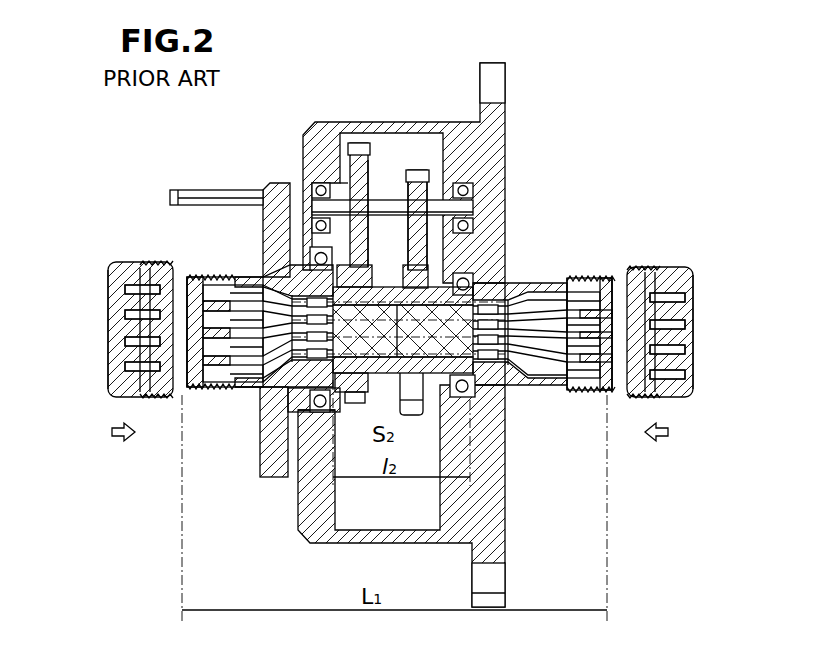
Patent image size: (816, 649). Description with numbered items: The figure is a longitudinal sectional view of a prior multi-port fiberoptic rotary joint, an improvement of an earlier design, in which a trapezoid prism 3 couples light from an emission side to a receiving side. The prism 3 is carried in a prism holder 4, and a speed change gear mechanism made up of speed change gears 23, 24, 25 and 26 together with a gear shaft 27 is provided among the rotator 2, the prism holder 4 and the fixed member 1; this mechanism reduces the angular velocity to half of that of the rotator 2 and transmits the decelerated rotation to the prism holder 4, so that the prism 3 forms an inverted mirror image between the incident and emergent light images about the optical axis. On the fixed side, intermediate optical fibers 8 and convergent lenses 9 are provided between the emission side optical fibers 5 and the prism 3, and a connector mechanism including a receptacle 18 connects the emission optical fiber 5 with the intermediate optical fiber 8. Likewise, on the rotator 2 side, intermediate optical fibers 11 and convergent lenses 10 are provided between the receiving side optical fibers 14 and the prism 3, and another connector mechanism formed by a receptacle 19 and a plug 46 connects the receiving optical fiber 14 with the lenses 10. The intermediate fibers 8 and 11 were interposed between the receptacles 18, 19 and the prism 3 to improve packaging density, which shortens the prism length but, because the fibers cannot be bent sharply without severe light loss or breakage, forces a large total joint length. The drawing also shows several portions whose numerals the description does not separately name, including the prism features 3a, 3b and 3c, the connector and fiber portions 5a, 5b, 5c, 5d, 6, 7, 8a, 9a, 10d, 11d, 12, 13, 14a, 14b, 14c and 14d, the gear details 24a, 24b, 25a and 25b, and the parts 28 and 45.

The fixed member 1 is at (503, 126).
The rotator 2 is at (262, 226).
The trapezoid prism 3 is at (354, 396).
The rotor slots 3a is at (504, 290).
The rotor spindle 3b is at (419, 414).
The rotor hub bearing 3c is at (372, 286).
The prism holder 4 is at (397, 290).
The emission side optical fibers 5 is at (708, 264).
The ferrule 5a is at (685, 299).
The ferrule 5b is at (685, 324).
The ferrule 5c is at (685, 350).
The ferrule 5d is at (685, 376).
The connector body 6 is at (688, 272).
The right fiber block 7 is at (597, 280).
The intermediate optical fibers 8 is at (546, 393).
The upper nozzle arm 8a is at (587, 285).
The convergent lenses 9 is at (511, 398).
The lower nozzle arm 9a is at (548, 300).
The convergent lenses 10 is at (298, 282).
The holder leg 10d is at (287, 430).
The intermediate optical fibers 11 is at (213, 285).
The block flange 11d is at (248, 390).
The block wall 12 is at (182, 280).
The connector wall 13 is at (112, 397).
The receiving side optical fibers 14 is at (106, 275).
The ferrule 14a is at (125, 290).
The ferrule 14b is at (125, 315).
The ferrule 14c is at (125, 341).
The ferrule 14d is at (125, 366).
The receptacle 18 is at (578, 395).
The receptacle 19 is at (182, 393).
The speed change gear 23 is at (345, 412).
The speed change gear 24 is at (356, 141).
The bolt shank 24a is at (340, 182).
The bolt thread 24b is at (372, 165).
The speed change gear 25 is at (420, 166).
The bolt shank 25a is at (402, 188).
The bolt thread 25b is at (445, 187).
The speed change gear 26 is at (452, 445).
The gear shaft 27 is at (337, 207).
The pin 28 is at (208, 194).
The fiber ribbon 45 is at (650, 280).
The plug 46 is at (123, 275).